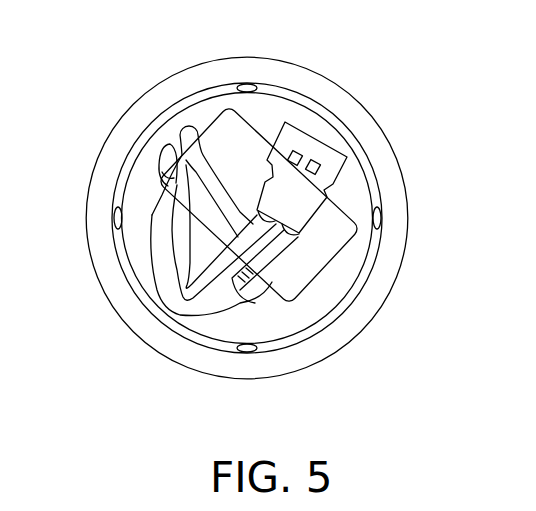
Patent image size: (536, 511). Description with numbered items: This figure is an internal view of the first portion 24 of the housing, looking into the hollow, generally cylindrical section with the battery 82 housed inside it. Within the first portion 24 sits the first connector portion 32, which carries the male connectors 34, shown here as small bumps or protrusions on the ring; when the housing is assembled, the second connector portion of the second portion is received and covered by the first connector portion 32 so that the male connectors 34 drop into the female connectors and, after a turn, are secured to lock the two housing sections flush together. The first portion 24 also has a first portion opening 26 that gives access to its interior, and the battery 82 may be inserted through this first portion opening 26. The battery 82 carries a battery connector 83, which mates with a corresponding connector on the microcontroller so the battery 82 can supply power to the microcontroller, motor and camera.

The first portion 24 is at (378, 163).
The first connector portion 32 is at (164, 121).
The male connectors 34 is at (116, 217).
The first portion opening 26 is at (270, 127).
The battery connector 83 is at (310, 143).
The battery 82 is at (320, 247).